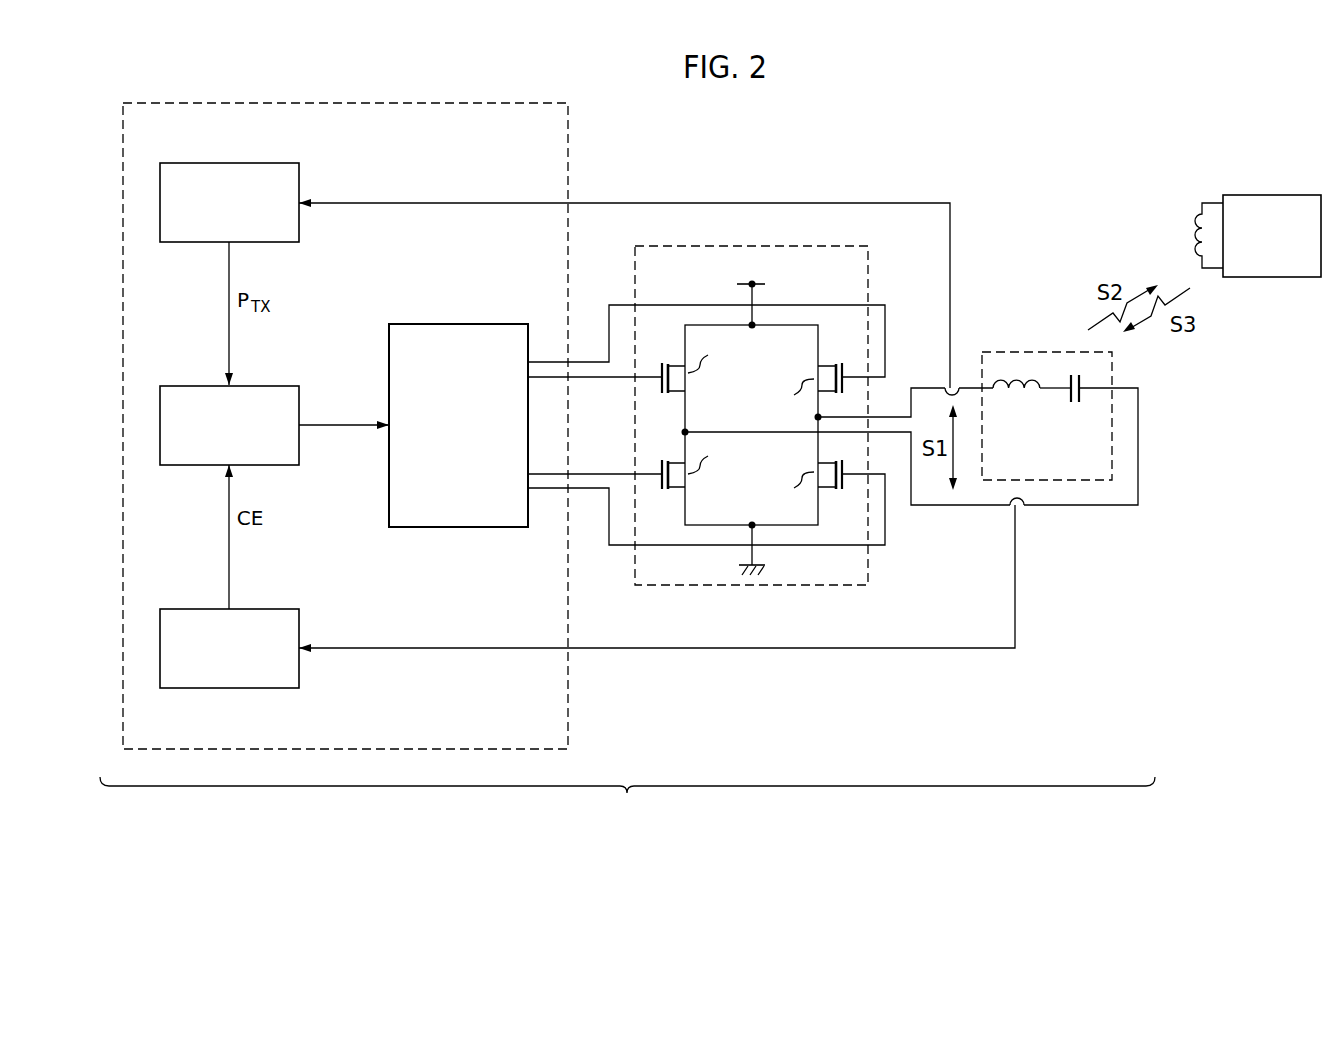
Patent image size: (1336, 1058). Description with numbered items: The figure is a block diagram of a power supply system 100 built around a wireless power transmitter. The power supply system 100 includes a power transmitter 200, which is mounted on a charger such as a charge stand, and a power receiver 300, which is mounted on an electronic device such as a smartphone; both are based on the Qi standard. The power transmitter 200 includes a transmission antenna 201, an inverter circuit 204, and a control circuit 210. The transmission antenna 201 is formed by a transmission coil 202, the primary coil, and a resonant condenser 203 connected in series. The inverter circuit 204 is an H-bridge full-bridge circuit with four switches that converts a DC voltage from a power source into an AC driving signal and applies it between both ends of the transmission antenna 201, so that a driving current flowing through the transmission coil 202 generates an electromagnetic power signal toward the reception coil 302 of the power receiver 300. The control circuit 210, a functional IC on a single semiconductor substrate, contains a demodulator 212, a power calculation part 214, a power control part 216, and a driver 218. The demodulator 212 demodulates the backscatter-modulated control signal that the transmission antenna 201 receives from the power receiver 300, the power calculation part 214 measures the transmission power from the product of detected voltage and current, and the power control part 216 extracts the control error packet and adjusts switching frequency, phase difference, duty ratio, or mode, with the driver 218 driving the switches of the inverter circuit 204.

The power supply system 100 is at (685, 888).
The power transmitter 200 is at (627, 801).
The transmission antenna 201 is at (1022, 352).
The transmission coil 202 is at (1015, 398).
The resonant condenser 203 is at (1076, 404).
The inverter circuit 204 is at (793, 585).
The control circuit 210 is at (569, 710).
The demodulator 212 is at (257, 607).
The power calculation part 214 is at (257, 160).
The power control part 216 is at (257, 384).
The driver 218 is at (460, 528).
The power receiver 300 is at (1268, 195).
The reception coil 302 is at (1190, 229).